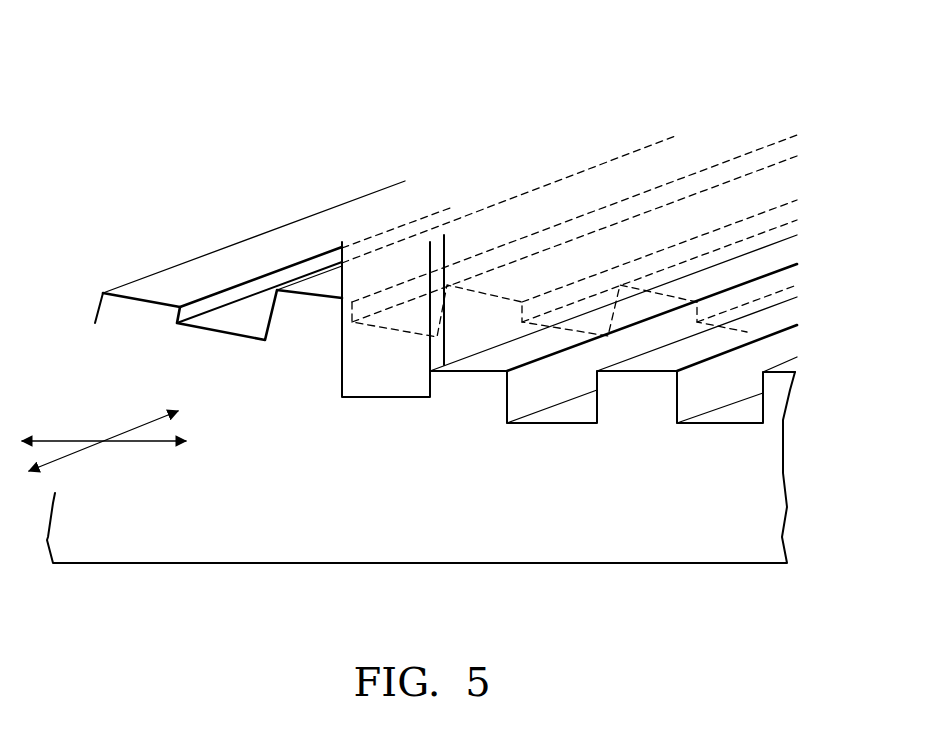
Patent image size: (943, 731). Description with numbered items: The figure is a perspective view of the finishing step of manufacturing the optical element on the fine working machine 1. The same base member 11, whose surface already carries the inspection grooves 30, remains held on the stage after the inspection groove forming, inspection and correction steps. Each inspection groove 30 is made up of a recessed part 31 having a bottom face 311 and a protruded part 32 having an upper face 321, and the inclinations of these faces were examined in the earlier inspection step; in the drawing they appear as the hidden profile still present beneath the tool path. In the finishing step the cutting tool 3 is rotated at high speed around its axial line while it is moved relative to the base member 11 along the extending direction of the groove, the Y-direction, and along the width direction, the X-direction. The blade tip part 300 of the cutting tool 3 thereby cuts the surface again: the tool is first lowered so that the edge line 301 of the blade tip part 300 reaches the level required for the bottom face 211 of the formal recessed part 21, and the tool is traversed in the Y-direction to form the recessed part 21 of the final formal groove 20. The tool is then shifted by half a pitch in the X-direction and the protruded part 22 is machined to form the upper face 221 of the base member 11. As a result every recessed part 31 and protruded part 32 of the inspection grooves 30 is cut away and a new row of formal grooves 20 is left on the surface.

The fine working machine 1 is at (706, 79).
The base member 11 is at (458, 399).
The formal groove 20 is at (613, 390).
The formal recessed part 21 is at (515, 445).
The bottom face of the formal recessed part 211 is at (580, 410).
The protruded part 22 is at (697, 398).
The upper face 221 is at (697, 348).
The cutting tool 3 is at (446, 257).
The blade tip part 300 is at (446, 257).
The inspection groove 30 is at (569, 193).
The recessed part 31 is at (553, 295).
The protruded part 32 is at (493, 285).
The edge line 301 is at (382, 398).
The bottom face of the recessed part 311 is at (247, 312).
The upper face of the protruded part 321 is at (165, 293).